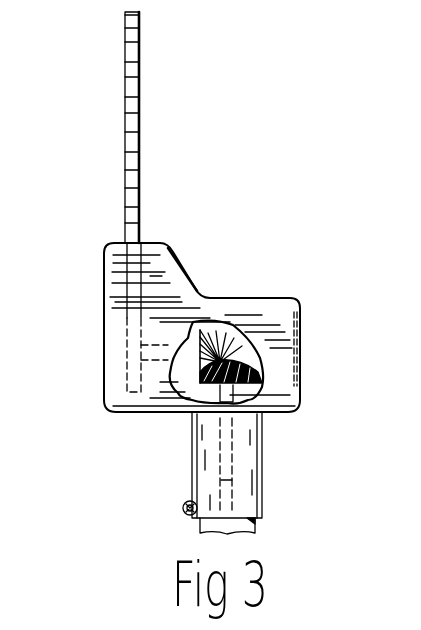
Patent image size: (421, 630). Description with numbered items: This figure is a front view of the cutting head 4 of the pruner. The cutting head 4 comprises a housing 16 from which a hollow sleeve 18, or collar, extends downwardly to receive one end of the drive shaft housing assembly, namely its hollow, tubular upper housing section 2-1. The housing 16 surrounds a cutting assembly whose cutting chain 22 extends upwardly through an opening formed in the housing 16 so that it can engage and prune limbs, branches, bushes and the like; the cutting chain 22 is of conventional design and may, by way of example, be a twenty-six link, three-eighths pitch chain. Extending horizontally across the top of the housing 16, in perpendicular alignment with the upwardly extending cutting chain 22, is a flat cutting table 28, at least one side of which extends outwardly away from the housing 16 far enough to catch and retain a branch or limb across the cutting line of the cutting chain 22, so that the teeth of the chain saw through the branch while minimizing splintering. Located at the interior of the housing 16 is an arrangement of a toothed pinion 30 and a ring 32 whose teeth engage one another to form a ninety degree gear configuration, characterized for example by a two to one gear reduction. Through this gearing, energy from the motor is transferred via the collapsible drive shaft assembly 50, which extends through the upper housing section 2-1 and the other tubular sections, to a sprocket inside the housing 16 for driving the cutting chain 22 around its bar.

The cutting head 4 is at (198, 233).
The housing 16 is at (238, 300).
The hollow sleeve 18 is at (243, 455).
The cutting chain 22 is at (130, 70).
The cutting table 28 is at (122, 242).
The toothed pinion 30 is at (183, 385).
The ring 32 is at (240, 372).
The collapsible drive shaft assembly 50 is at (232, 480).
The upper housing section 2-1 is at (258, 524).